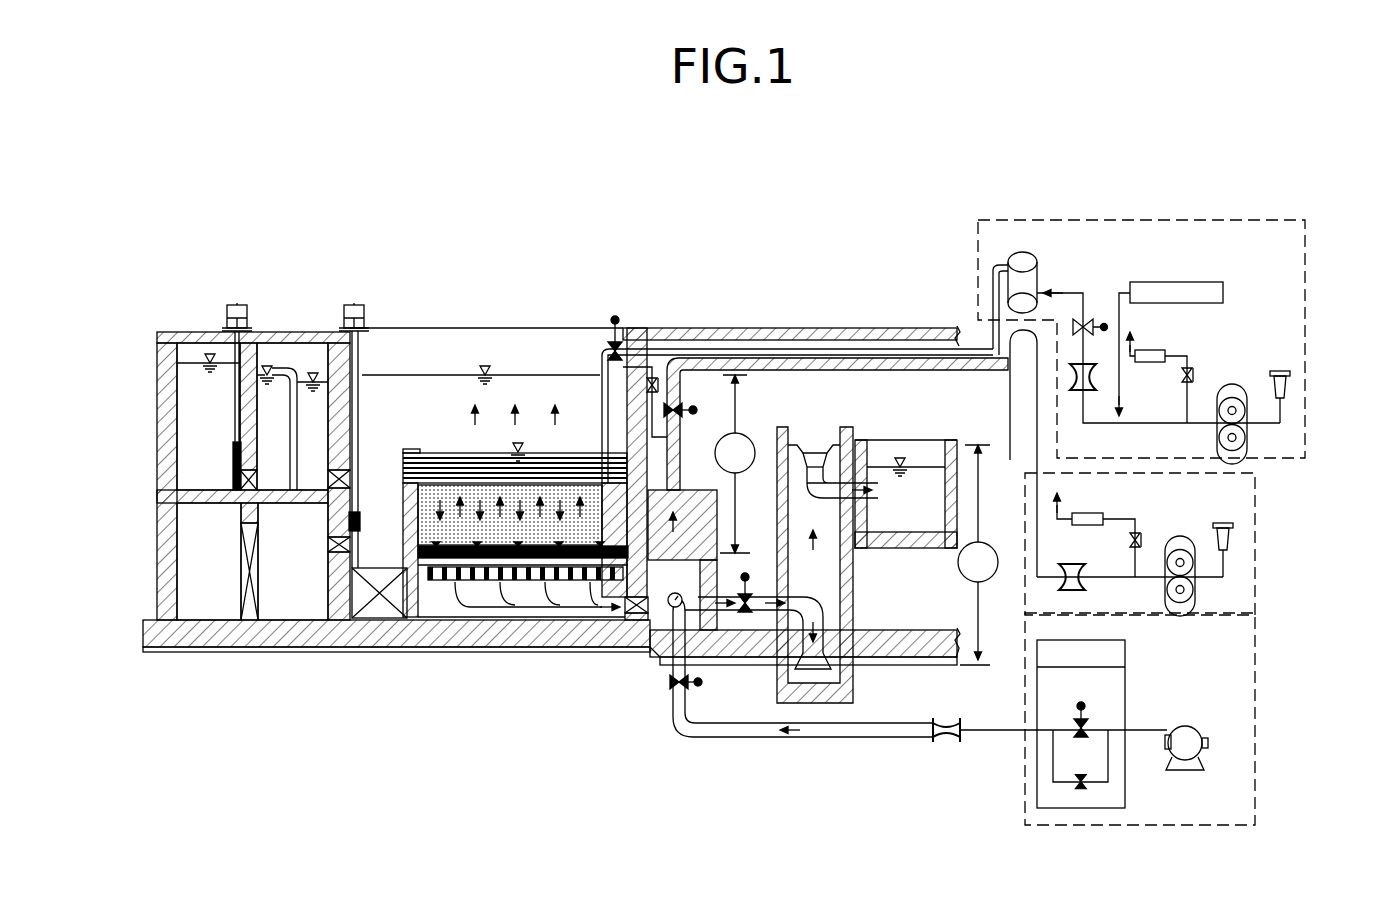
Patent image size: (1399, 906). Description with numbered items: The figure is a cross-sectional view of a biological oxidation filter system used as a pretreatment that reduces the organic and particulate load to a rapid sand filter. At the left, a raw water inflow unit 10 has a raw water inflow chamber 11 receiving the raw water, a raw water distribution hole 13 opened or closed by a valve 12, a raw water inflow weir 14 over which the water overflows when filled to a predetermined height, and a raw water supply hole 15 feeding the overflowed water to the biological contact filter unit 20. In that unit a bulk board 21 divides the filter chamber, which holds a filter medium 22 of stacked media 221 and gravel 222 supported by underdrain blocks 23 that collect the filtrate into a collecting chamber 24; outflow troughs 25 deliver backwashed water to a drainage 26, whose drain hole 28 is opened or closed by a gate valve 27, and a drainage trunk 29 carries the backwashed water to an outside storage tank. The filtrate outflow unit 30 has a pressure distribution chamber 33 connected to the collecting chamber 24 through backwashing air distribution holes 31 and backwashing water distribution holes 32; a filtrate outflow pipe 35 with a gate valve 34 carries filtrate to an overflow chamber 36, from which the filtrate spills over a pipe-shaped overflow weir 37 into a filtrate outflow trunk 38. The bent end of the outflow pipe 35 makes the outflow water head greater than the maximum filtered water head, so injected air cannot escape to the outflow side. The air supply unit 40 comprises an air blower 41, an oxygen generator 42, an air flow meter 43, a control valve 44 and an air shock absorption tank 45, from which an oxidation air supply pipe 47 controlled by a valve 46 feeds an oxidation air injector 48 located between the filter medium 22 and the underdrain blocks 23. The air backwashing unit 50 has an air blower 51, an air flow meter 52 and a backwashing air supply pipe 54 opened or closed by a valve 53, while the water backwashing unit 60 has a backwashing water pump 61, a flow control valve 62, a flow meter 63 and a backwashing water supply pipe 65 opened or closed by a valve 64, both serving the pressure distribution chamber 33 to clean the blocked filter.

The raw water inflow unit 10 is at (357, 265).
The raw water inflow chamber 11 is at (185, 351).
The valve 12 is at (235, 479).
The raw water distribution hole 13 is at (243, 500).
The raw water inflow weir 14 is at (287, 352).
The raw water supply hole 15 is at (362, 482).
The biological contact filter unit 20 is at (613, 265).
The bulk board 21 is at (412, 520).
The filter medium 22 is at (442, 746).
The stacked media 221 is at (427, 513).
The gravel 222 is at (432, 551).
The underdrain blocks 23 is at (477, 557).
The collecting chamber 24 is at (527, 548).
The outflow troughs 25 is at (587, 455).
The drainage 26 is at (332, 522).
The gate valve 27 is at (346, 622).
The drain hole 28 is at (362, 512).
The drainage trunk 29 is at (200, 604).
The filtrate outflow unit 30 is at (906, 265).
The backwashing air distribution holes 31 is at (615, 608).
The backwashing water distribution holes 32 is at (636, 614).
The pressure distribution chamber 33 is at (668, 606).
The gate valve 34 is at (742, 614).
The filtrate outflow pipe 35 is at (826, 650).
The overflow chamber 36 is at (770, 440).
The overflow weir 37 is at (814, 450).
The filtrate outflow trunk 38 is at (928, 455).
The air supply unit 40 is at (1143, 217).
The air blower 41 is at (1247, 438).
The oxygen generator 42 is at (1202, 298).
The air flow meter 43 is at (1075, 322).
The control valve 44 is at (1088, 365).
The air shock absorption tank 45 is at (1022, 258).
The valve 46 is at (619, 318).
The oxidation air supply pipe 47 is at (735, 349).
The oxidation air injector 48 is at (550, 566).
The air backwashing unit 50 is at (1255, 541).
The air blower 51 is at (1192, 592).
The air flow meter 52 is at (1082, 590).
The valve 53 is at (693, 405).
The backwashing air supply pipe 54 is at (878, 358).
The water backwashing unit 60 is at (1255, 690).
The backwashing water pump 61 is at (1202, 750).
The flow control valve 62 is at (1086, 810).
The flow meter 63 is at (948, 743).
The valve 64 is at (690, 690).
The backwashing water supply pipe 65 is at (890, 738).